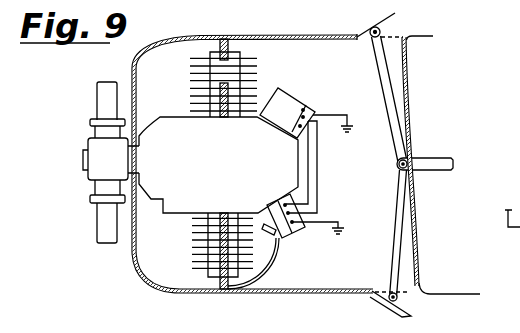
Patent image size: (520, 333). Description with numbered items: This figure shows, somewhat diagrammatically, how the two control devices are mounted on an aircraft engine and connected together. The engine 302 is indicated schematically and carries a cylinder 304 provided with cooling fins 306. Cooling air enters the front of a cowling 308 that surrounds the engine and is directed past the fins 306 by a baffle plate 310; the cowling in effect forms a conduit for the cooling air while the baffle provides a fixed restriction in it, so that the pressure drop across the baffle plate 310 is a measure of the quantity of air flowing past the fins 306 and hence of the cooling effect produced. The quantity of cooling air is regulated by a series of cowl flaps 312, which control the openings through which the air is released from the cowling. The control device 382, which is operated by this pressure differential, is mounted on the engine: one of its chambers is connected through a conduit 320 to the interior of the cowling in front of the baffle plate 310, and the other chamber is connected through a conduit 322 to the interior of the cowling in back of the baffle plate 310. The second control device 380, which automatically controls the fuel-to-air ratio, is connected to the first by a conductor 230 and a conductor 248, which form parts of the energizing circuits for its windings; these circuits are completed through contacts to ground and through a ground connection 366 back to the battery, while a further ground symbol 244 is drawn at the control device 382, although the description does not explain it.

The engine 302 is at (218, 165).
The cylinder 304 is at (242, 54).
The cooling fins 306 is at (247, 70).
The cowling 308 is at (199, 36).
The baffle plate 310 is at (220, 37).
The cowl flaps 312 is at (372, 27).
The control device 380 is at (292, 100).
The ground connection 366 is at (349, 129).
The conductor 248 is at (309, 163).
The conductor 230 is at (318, 193).
The ground connection 244 is at (346, 229).
The control device 382 is at (306, 228).
The conduit 322 is at (276, 234).
The conduit 320 is at (271, 266).